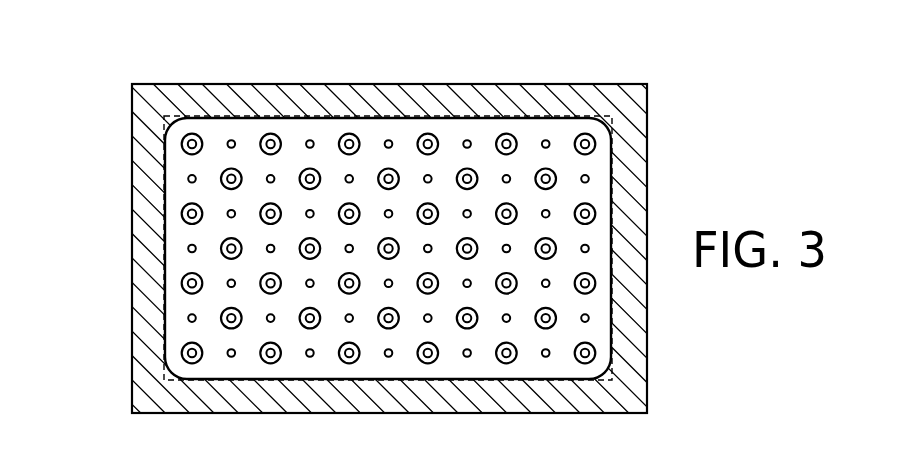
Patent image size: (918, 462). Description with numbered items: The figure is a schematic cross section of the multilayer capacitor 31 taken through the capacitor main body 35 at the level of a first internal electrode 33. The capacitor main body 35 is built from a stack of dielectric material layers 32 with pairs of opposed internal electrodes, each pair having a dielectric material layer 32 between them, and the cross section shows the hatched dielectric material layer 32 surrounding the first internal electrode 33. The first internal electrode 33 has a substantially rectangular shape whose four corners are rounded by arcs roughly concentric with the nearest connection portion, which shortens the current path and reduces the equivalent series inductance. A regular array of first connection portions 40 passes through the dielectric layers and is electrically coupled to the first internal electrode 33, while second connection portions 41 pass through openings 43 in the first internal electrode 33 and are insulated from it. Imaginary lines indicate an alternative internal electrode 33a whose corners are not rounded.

The multilayer capacitor 31 is at (121, 82).
The dielectric material layer 32 is at (141, 397).
The first internal electrode 33 is at (614, 149).
The internal electrode 33a is at (612, 116).
The capacitor main body 35 is at (621, 81).
The first connection portion 40 is at (308, 140).
The second connection portion 41 is at (426, 141).
The opening 43 is at (583, 140).